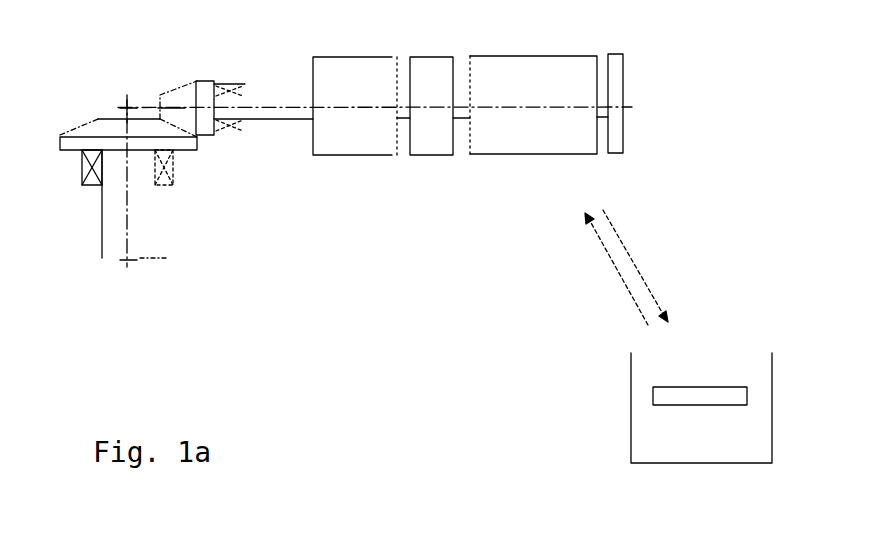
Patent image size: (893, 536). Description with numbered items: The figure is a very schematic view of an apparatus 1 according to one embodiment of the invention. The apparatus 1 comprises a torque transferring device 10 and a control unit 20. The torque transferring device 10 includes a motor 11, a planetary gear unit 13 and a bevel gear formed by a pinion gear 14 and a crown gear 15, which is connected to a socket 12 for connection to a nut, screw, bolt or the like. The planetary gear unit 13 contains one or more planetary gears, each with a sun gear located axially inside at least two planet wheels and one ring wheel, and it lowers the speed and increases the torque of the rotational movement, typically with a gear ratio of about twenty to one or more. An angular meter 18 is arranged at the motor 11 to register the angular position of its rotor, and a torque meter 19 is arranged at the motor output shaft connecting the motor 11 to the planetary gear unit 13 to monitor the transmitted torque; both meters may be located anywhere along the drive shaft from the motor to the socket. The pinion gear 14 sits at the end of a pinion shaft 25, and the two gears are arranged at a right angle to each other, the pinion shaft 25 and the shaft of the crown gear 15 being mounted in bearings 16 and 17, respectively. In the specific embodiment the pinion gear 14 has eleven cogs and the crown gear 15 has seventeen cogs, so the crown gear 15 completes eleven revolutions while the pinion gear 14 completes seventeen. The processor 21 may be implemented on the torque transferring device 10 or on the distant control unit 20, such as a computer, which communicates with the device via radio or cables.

The apparatus 1 is at (338, 327).
The torque transferring device 10 is at (140, 326).
The motor 11 is at (512, 154).
The socket 12 is at (167, 258).
The planetary gear unit 13 is at (335, 155).
The pinion gear 14 is at (176, 93).
The crown gear 15 is at (95, 128).
The bearing 16 is at (230, 93).
The bearing 17 is at (82, 185).
The angular meter 18 is at (623, 147).
The torque meter 19 is at (423, 155).
The control unit 20 is at (722, 358).
The processor 21 is at (663, 399).
The pinion shaft 25 is at (298, 93).